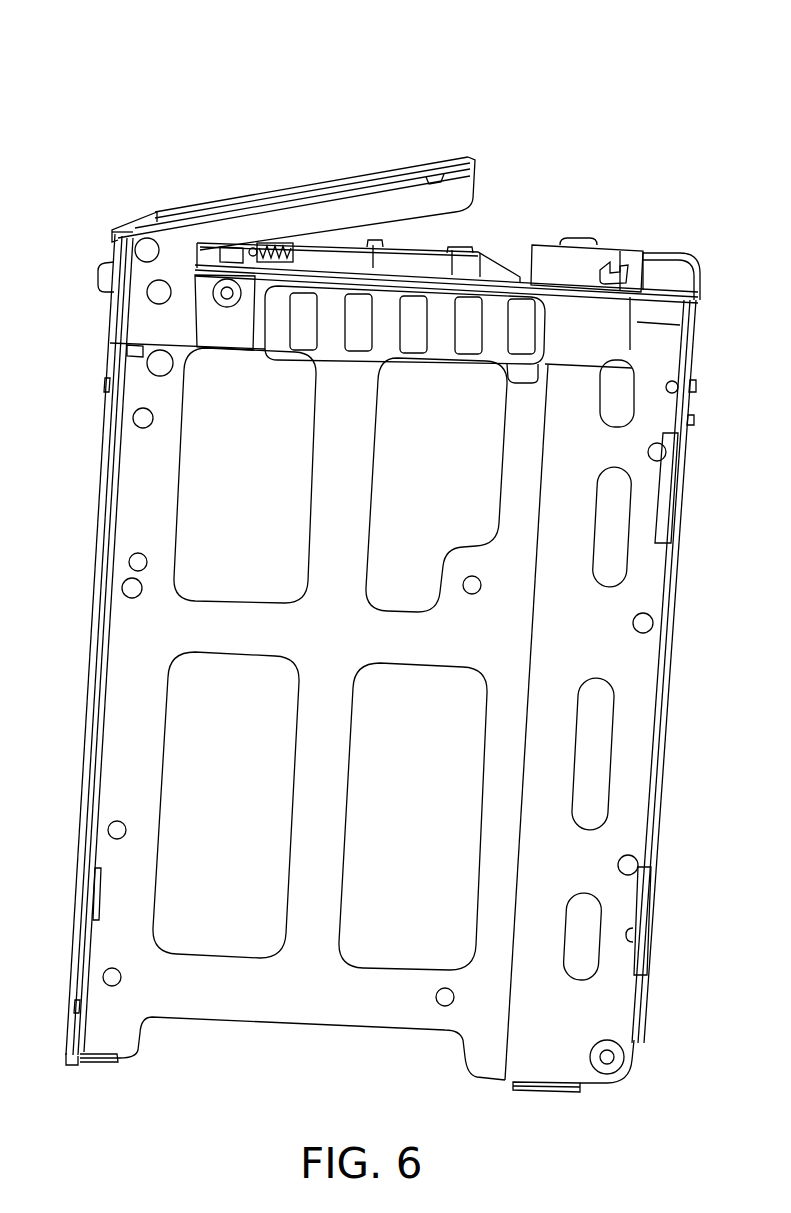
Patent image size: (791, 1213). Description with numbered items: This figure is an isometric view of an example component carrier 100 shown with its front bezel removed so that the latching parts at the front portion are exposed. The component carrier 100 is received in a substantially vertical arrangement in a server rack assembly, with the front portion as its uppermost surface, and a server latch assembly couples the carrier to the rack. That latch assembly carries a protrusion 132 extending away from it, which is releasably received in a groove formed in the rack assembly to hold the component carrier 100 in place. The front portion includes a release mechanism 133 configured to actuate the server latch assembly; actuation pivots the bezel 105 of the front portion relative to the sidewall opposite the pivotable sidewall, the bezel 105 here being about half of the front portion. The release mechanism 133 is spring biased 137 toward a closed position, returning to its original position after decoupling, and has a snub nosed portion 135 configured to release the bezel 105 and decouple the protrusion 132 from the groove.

The component carrier 100 is at (607, 60).
The bezel 105 is at (382, 168).
The protrusion 132 is at (105, 265).
The release mechanism 133 is at (578, 236).
The snub nosed portion 135 is at (488, 273).
The spring bias 137 is at (272, 243).